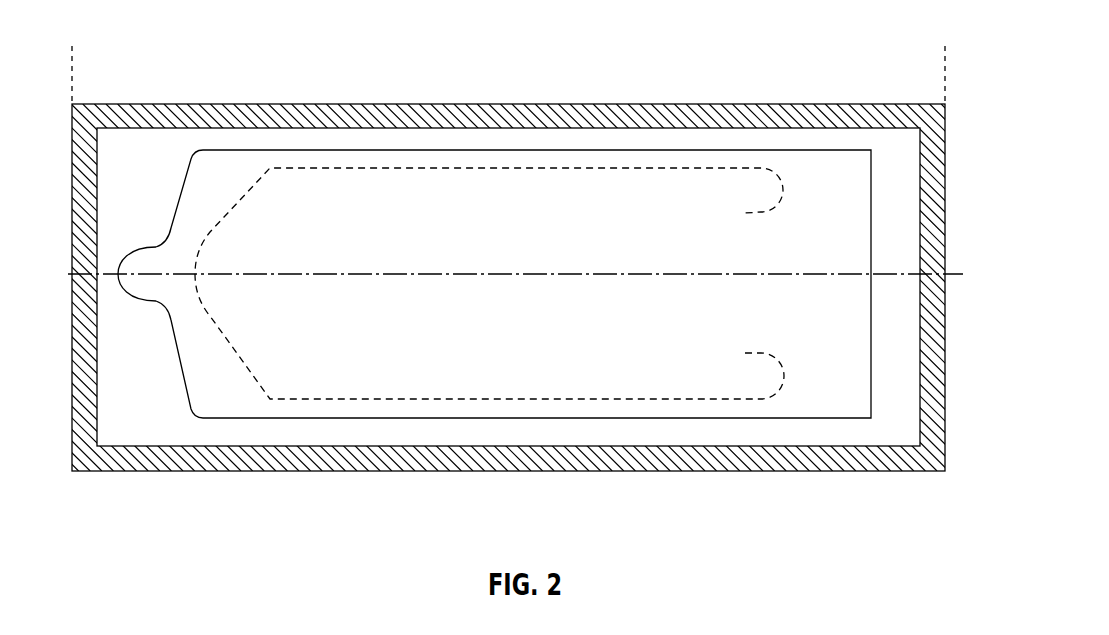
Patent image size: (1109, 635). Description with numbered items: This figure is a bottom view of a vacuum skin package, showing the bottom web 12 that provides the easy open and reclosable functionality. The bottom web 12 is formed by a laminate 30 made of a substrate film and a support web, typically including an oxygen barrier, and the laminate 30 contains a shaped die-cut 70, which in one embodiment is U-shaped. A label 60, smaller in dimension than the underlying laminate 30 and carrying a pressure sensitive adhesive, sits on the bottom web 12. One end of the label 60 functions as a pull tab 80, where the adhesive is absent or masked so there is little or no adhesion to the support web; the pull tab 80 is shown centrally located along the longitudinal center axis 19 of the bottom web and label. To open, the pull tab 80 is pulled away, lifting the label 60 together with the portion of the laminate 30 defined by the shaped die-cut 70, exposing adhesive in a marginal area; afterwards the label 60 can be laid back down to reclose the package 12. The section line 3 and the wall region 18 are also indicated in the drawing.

The section line 3- 3 is at (508, 61).
The bottom web 12 is at (958, 116).
The housing wall 18 is at (940, 270).
The central axis 19 is at (333, 272).
The laminate 30 is at (900, 213).
The label 60 is at (845, 400).
The shaped die-cut 70 is at (490, 400).
The pull tab 80 is at (143, 288).